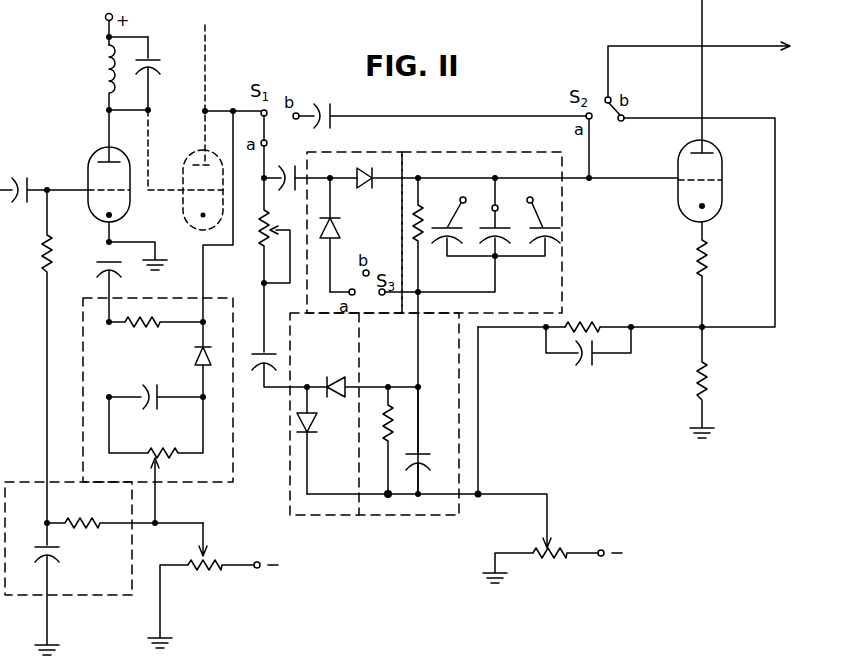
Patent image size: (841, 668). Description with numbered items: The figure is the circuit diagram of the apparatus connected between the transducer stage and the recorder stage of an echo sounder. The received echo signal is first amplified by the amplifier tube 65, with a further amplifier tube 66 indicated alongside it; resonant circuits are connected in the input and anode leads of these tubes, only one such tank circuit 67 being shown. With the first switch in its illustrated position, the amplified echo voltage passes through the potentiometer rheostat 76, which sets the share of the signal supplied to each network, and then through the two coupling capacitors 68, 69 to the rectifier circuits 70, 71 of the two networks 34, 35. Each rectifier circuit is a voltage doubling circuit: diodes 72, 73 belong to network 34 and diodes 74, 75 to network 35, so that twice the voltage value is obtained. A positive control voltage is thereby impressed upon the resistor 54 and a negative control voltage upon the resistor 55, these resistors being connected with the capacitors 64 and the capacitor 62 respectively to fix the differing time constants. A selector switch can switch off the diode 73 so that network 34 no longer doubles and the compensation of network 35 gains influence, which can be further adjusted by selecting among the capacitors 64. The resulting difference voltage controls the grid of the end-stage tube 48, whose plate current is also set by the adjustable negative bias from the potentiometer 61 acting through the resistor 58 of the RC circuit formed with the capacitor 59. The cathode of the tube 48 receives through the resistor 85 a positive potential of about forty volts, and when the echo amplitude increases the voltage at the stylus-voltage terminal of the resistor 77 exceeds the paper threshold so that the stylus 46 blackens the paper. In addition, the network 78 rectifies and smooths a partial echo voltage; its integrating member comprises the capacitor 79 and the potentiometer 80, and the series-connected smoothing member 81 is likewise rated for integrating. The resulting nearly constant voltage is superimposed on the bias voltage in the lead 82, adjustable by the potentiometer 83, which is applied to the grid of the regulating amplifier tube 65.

The network 34 is at (444, 150).
The network 35 is at (459, 515).
The stylus 46 is at (786, 52).
The end-stage tube 48 is at (678, 155).
The resistor 54 is at (425, 215).
The resistor 55 is at (382, 420).
The resistor 58 is at (602, 325).
The capacitor 59 is at (602, 372).
The potentiometer 61 is at (546, 546).
The capacitor 62 is at (426, 452).
The capacitors 64 is at (542, 210).
The amplifier tube 65 is at (100, 150).
The amplifier tube 66 is at (190, 150).
The tank circuit 67 is at (148, 38).
The coupling capacitor 68 is at (301, 166).
The coupling capacitor 69 is at (255, 367).
The voltage doubling circuit 70 is at (324, 155).
The voltage doubling circuit 71 is at (290, 460).
The diode 72 is at (370, 170).
The diode 73 is at (340, 234).
The diode 74 is at (342, 379).
The diode 75 is at (298, 418).
The potentiometer rheostat 76 is at (268, 229).
The resistor 77 is at (690, 396).
The network 78 is at (235, 444).
The integrating member capacitor 79 is at (167, 384).
The potentiometer 80 is at (174, 452).
The filter block 81 is at (35, 482).
The lead 82 is at (206, 540).
The potentiometer 83 is at (210, 564).
The resistor 85 is at (711, 262).